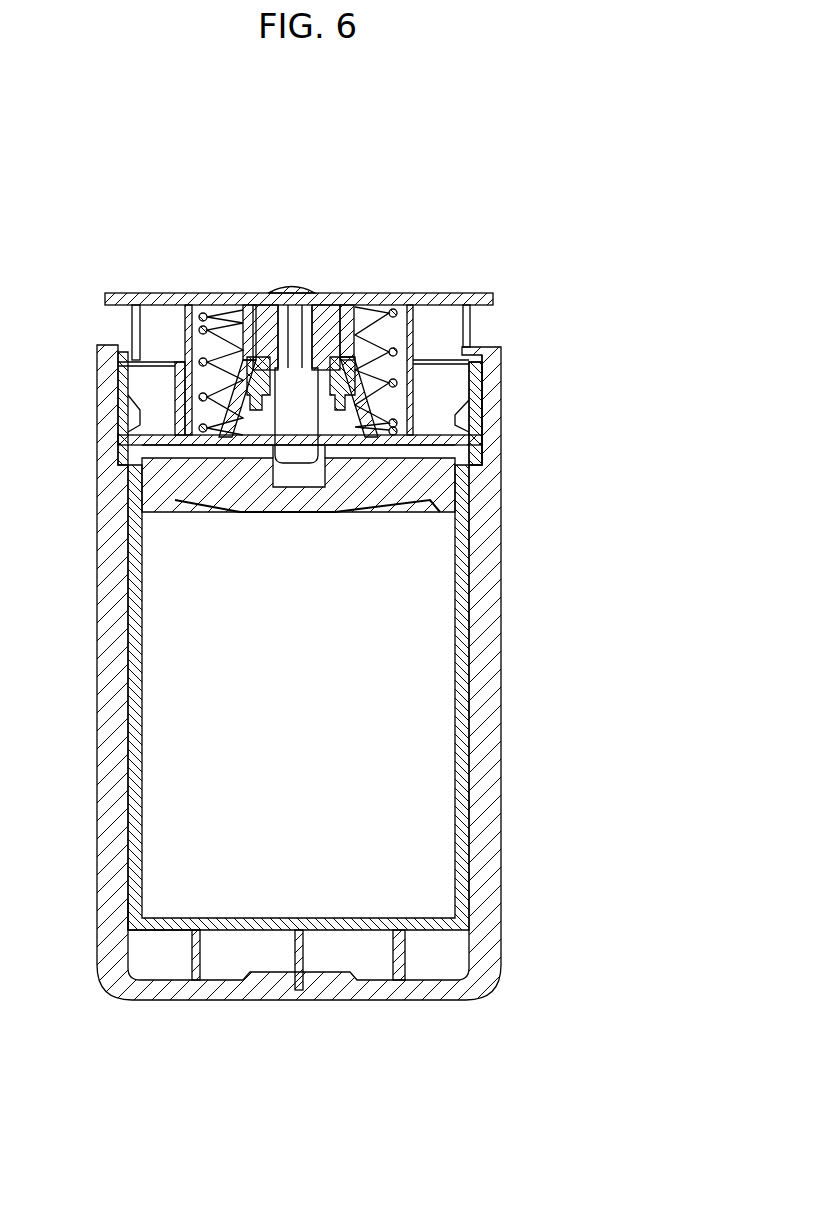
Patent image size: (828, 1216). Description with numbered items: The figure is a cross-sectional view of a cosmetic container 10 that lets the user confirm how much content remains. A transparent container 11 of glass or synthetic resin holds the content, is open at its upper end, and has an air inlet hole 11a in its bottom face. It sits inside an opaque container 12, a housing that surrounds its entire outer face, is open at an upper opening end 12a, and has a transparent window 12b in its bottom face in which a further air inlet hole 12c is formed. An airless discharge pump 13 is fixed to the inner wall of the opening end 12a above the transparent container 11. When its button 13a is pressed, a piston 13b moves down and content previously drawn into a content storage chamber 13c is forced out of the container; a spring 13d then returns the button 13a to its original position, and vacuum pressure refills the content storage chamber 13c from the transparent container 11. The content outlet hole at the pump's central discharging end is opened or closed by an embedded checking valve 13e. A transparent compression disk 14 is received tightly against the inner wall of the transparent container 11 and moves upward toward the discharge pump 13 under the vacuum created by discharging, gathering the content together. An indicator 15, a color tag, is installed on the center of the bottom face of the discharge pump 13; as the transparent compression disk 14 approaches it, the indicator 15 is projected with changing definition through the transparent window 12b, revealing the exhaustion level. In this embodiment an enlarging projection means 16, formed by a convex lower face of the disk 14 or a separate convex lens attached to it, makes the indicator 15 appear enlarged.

The cosmetic container 10 is at (529, 209).
The transparent container 11 is at (463, 773).
The air inlet hole 11a is at (150, 960).
The opaque container 12 is at (490, 652).
The opening end 12a is at (482, 382).
The transparent window 12b is at (400, 968).
The air inlet hole 12c is at (300, 988).
The discharge pump 13 is at (428, 210).
The button 13a is at (150, 295).
The piston 13b is at (334, 418).
The content storage chamber 13c is at (365, 385).
The spring 13d is at (217, 293).
The checking valve 13e is at (293, 310).
The transparent compression disk 14 is at (470, 522).
The indicator 15 is at (468, 462).
The enlarging projection means 16 is at (373, 513).